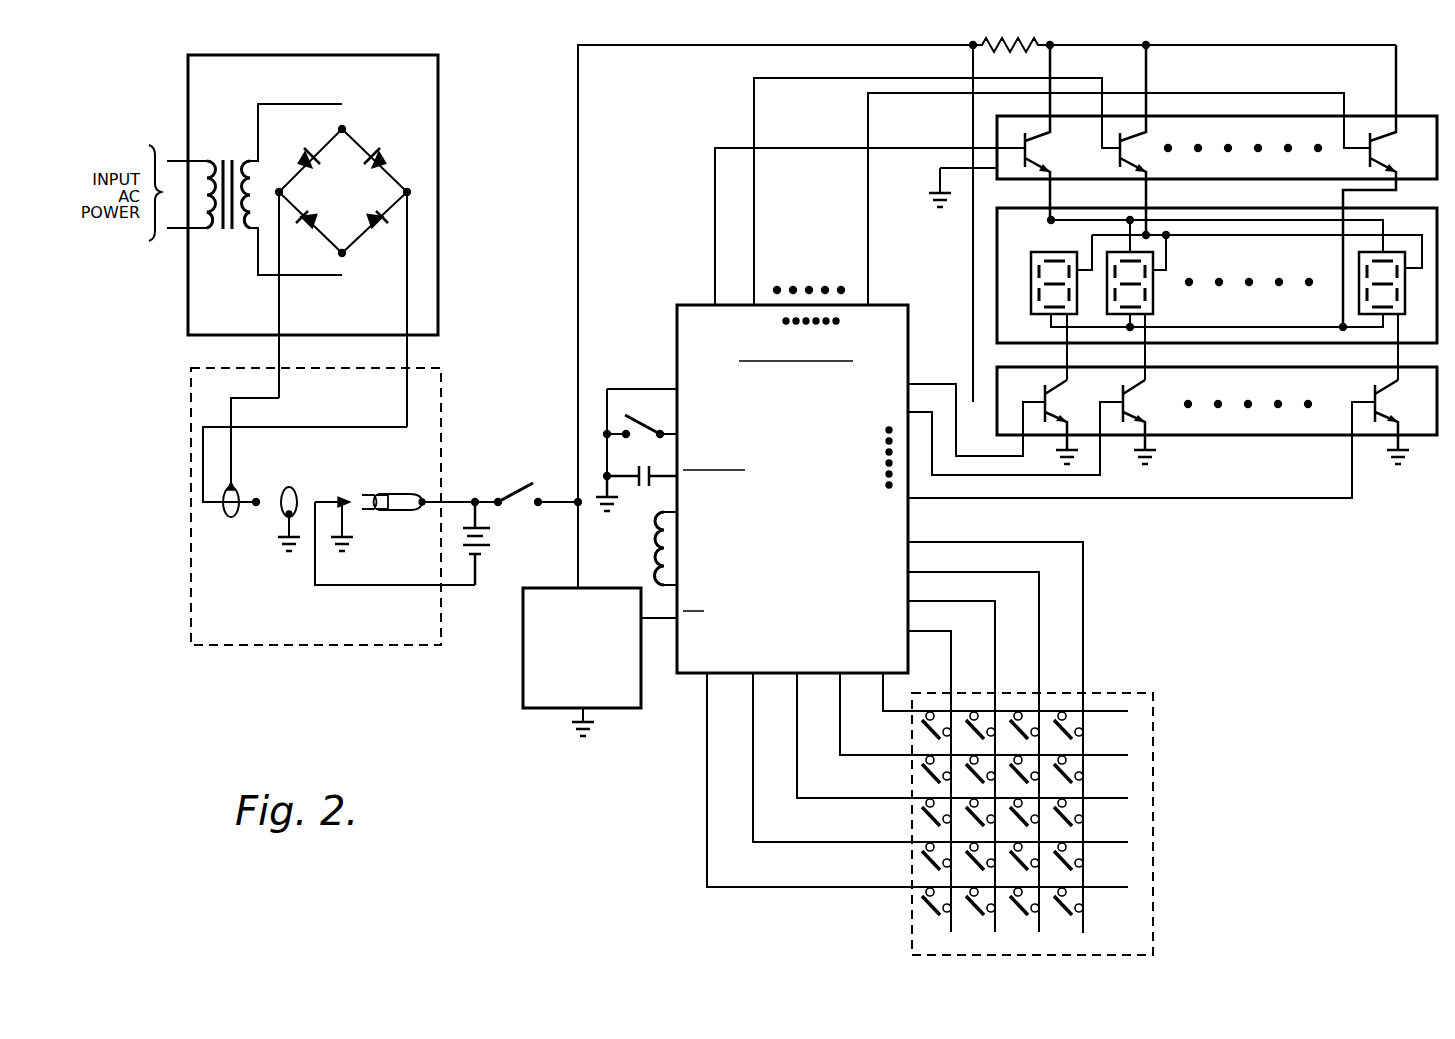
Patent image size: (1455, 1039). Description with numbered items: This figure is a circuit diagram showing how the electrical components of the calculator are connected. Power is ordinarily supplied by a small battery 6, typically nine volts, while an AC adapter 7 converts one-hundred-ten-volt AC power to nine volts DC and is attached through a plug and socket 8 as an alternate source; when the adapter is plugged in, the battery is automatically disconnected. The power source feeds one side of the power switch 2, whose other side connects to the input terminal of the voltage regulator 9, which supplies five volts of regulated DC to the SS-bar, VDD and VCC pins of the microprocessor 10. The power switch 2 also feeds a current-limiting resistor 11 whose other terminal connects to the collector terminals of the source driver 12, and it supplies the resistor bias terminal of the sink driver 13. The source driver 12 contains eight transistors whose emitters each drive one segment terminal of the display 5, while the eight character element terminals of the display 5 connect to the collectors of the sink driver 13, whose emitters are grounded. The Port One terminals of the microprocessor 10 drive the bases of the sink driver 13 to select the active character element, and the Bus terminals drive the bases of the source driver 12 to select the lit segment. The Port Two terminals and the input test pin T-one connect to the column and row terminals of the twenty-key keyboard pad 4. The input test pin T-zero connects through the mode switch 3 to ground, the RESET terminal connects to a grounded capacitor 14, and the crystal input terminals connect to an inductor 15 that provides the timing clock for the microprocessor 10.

The power switch 2 is at (520, 486).
The mode switch 3 is at (648, 424).
The keyboard pad 4 is at (1155, 735).
The display 5 is at (1262, 208).
The battery 6 is at (489, 528).
The AC adapter 7 is at (440, 184).
The plug and socket 8 is at (441, 376).
The voltage regulator 9 is at (522, 672).
The microprocessor 10 is at (678, 300).
The current-limiting resistor 11 is at (1011, 50).
The source driver 12 is at (1366, 115).
The sink driver 13 is at (1279, 437).
The capacitor 14 is at (644, 468).
The inductor 15 is at (653, 557).